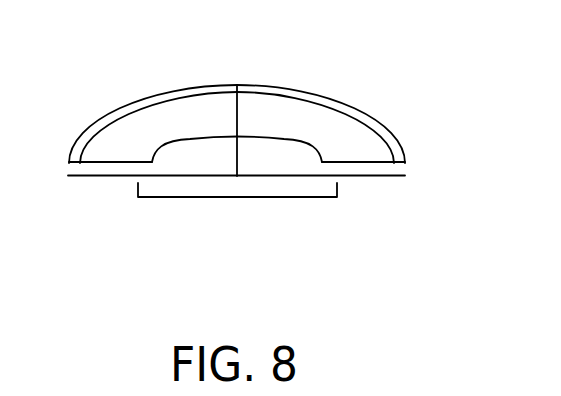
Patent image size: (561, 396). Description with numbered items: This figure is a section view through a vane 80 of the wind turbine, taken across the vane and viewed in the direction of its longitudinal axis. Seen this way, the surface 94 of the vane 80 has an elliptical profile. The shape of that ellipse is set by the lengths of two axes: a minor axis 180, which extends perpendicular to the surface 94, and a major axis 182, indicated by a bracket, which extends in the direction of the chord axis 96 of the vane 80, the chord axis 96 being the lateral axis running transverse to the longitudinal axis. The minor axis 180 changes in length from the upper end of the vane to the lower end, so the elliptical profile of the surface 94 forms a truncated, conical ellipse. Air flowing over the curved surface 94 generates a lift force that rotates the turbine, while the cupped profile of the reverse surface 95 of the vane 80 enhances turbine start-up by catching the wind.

The vane 80 is at (383, 108).
The surface 94 is at (123, 105).
The reverse surface 95 is at (101, 132).
The chord axis 96 is at (370, 177).
The minor axis 180 is at (237, 117).
The major axis 182 is at (275, 198).